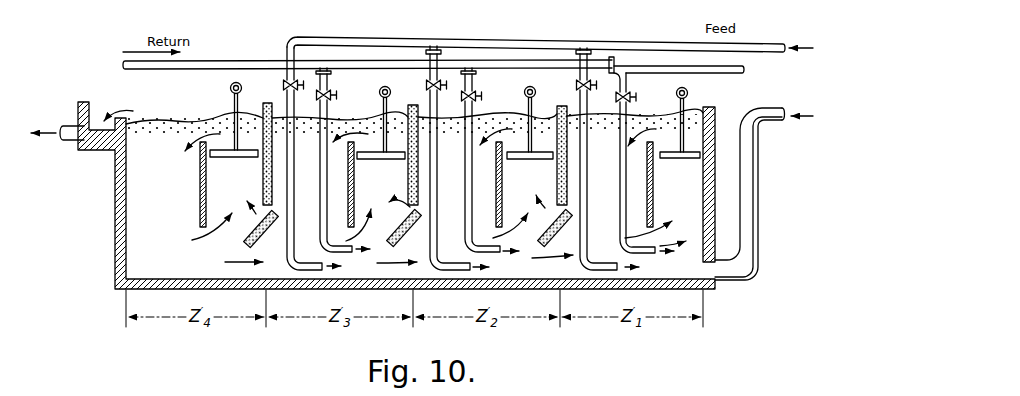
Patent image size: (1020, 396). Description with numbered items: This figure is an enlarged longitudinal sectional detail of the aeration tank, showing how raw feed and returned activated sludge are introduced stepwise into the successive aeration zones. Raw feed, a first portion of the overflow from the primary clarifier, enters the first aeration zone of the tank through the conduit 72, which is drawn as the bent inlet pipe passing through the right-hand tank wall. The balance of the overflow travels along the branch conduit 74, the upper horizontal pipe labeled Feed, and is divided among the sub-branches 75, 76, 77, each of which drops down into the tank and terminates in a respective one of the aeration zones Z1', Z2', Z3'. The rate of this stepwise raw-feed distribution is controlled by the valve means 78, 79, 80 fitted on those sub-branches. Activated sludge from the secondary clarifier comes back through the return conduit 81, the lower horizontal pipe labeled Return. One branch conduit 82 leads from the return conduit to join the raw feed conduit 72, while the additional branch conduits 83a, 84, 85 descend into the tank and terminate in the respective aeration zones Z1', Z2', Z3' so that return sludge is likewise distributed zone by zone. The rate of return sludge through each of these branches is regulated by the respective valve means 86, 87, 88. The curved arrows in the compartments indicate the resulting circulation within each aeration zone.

The conduit 72 is at (759, 212).
The branch conduit 74 is at (512, 41).
The sub-branch 75 is at (589, 94).
The sub-branch 76 is at (439, 96).
The sub-branch 77 is at (295, 92).
The valve means 78 is at (576, 84).
The valve means 79 is at (426, 84).
The valve means 80 is at (282, 84).
The return conduit 81 is at (233, 61).
The branch conduit 82 is at (704, 73).
The branch conduit 83a is at (613, 164).
The branch conduit 84 is at (477, 107).
The branch conduit 85 is at (328, 107).
The valve means 86 is at (634, 90).
The valve means 87 is at (482, 89).
The valve means 88 is at (332, 88).